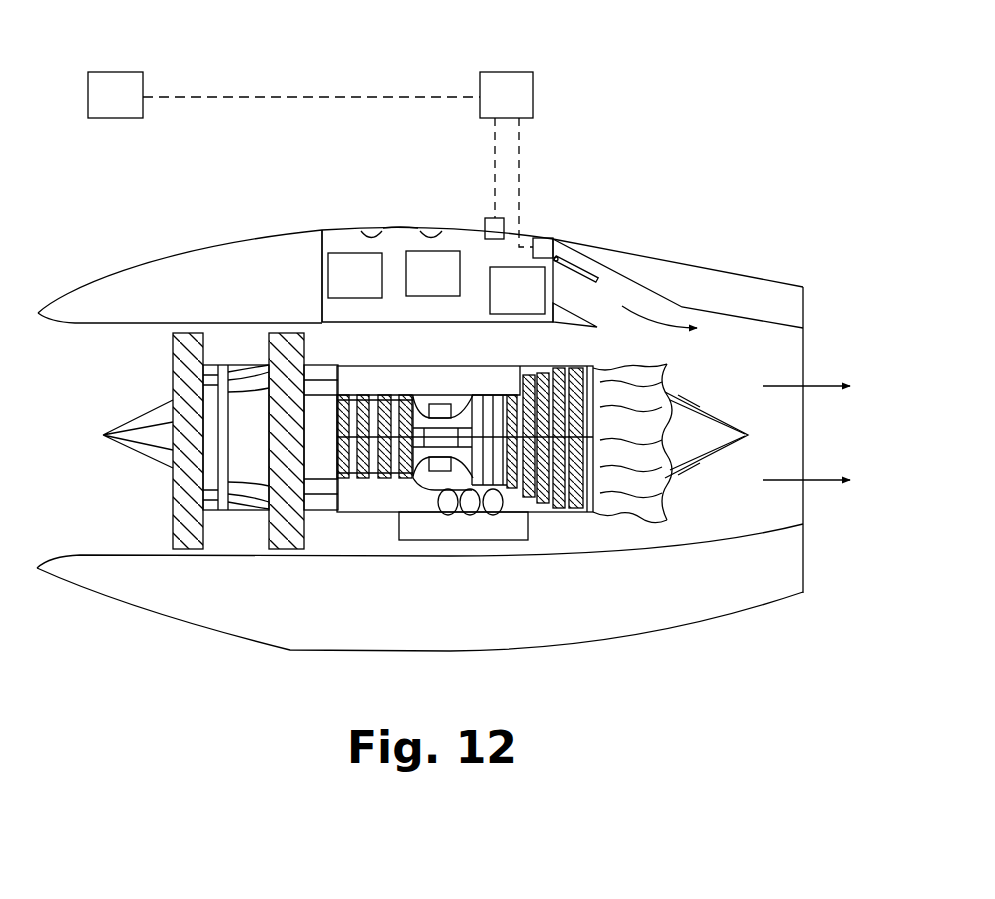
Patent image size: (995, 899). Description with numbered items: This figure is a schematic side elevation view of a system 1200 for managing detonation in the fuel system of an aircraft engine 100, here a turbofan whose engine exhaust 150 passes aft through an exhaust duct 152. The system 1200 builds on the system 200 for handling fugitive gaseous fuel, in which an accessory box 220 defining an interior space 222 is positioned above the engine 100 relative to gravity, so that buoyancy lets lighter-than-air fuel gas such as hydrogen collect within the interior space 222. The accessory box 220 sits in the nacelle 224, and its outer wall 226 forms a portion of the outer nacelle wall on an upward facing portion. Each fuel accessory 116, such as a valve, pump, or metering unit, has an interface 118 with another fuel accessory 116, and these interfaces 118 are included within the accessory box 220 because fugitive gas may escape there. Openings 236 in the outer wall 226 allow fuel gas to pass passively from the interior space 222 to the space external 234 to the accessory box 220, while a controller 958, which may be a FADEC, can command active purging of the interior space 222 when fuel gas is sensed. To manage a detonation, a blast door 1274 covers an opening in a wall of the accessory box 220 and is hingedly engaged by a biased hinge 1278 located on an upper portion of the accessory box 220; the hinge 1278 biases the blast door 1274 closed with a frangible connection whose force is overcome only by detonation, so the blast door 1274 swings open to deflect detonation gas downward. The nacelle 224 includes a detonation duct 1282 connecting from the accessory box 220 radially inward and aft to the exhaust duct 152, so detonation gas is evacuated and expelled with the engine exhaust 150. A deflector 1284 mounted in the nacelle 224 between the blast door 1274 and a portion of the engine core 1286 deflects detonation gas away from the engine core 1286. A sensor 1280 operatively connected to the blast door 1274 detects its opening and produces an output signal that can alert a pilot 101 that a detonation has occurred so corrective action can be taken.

The system for managing detonation 1200 is at (326, 70).
The pilot 101 is at (115, 95).
The space external to the accessory box 234 is at (338, 151).
The controller 958 is at (506, 95).
The system for handling fugitive gaseous fuel 200 is at (315, 156).
The nacelle 224 is at (157, 256).
The accessory box 220 is at (316, 262).
The outer wall 226 is at (330, 230).
The openings 236 is at (370, 230).
The interior space 222 is at (401, 229).
The fuel accessory 116 is at (372, 290).
The interface 118 is at (502, 297).
The sensor 1280 is at (542, 238).
The blast door 1274 is at (577, 263).
The biased hinge 1278 is at (557, 264).
The deflector 1284 is at (560, 324).
The detonation duct 1282 is at (630, 290).
The exhaust duct 152 is at (790, 351).
The engine exhaust 150 is at (827, 485).
The engine 100 is at (103, 417).
The engine core 1286 is at (569, 520).